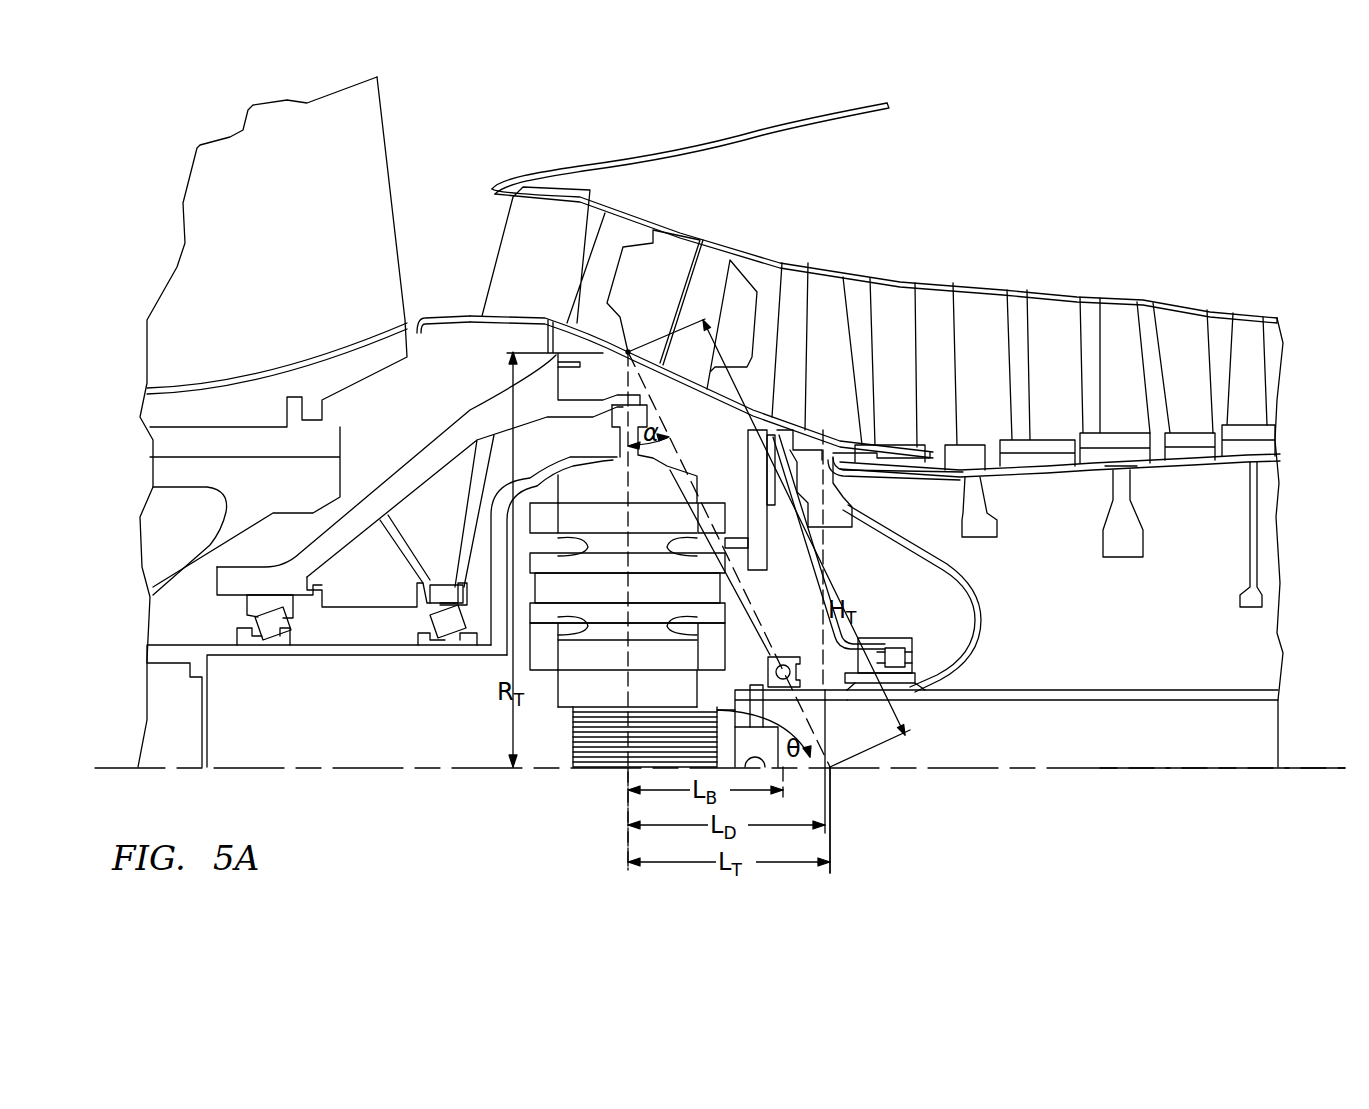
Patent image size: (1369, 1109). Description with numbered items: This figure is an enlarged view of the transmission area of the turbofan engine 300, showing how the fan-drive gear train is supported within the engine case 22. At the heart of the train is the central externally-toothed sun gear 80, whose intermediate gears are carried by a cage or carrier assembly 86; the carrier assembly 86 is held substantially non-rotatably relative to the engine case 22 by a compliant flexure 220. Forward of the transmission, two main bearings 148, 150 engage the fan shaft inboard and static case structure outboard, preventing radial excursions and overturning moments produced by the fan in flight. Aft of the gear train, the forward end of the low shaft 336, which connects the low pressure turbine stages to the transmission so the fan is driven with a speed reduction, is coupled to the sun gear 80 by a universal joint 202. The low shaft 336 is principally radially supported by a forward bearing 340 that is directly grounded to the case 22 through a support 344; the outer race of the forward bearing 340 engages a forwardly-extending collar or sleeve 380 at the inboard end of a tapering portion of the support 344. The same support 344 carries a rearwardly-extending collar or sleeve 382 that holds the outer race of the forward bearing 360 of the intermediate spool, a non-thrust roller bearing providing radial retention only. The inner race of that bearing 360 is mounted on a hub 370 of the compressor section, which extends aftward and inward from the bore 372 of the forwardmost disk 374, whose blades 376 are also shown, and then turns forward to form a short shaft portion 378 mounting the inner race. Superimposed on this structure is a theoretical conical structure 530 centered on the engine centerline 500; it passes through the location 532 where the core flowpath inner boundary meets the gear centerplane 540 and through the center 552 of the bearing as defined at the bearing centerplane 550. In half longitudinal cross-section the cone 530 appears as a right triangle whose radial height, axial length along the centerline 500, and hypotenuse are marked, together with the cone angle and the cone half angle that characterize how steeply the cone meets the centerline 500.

The turbofan engine 300 is at (1068, 178).
The engine case 22 is at (1025, 272).
The blades 376 is at (835, 332).
The location 532 is at (630, 350).
The forwardmost disk 374 is at (843, 477).
The bore 372 is at (833, 510).
The compliant flexure 220 is at (742, 478).
The support 344 is at (810, 577).
The hub 370 is at (965, 578).
The forwardly-extending collar or sleeve 380 is at (767, 660).
The rearwardly-extending collar or sleeve 382 is at (868, 645).
The sun gear 80 is at (593, 690).
The forward bearing 360 is at (915, 650).
The low shaft 336 is at (1068, 692).
The forward bearing 340 is at (760, 658).
The theoretical conical structure 530 is at (729, 559).
The bearing center 552 is at (768, 673).
The short shaft portion 378 is at (898, 676).
The carrier assembly 86 is at (547, 680).
The universal joint 202 is at (746, 752).
The gear centerplane 540 is at (627, 850).
The bearing centerplane 550 is at (800, 780).
The main bearing 148 is at (263, 638).
The main bearing 150 is at (450, 633).
The centerline 500 is at (1333, 770).